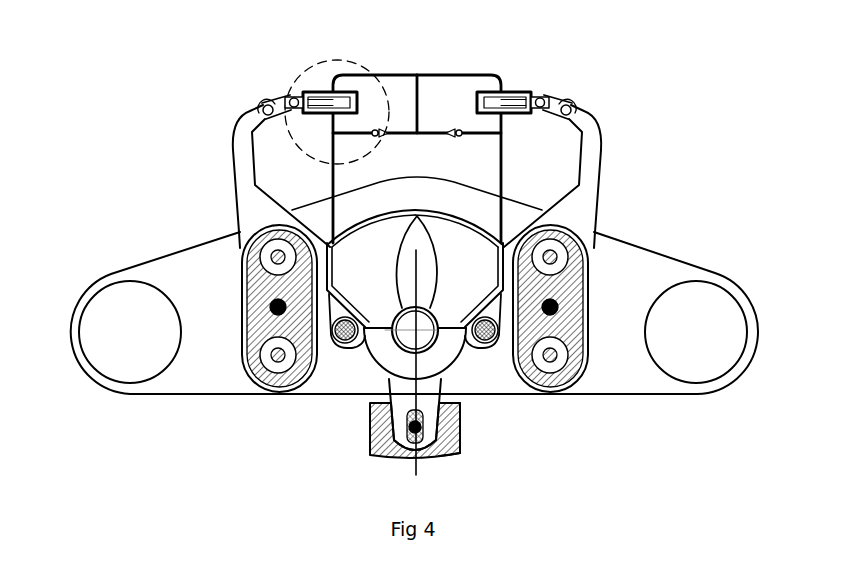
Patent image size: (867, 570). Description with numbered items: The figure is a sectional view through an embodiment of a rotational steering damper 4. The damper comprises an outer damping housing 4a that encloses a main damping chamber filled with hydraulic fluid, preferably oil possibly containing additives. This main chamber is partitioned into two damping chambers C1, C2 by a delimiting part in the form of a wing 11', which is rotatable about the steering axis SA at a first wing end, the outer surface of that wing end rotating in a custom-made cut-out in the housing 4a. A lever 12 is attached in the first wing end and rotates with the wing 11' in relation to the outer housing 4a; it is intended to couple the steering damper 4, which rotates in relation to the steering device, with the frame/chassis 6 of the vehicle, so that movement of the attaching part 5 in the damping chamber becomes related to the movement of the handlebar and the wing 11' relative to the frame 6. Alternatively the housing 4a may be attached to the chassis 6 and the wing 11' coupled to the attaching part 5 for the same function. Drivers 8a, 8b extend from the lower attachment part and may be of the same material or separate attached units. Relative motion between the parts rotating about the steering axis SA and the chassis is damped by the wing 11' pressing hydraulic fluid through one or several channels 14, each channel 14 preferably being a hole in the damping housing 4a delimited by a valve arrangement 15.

The steering damper 4 is at (417, 213).
The outer damping housing 4a is at (443, 357).
The attaching part 5 is at (203, 300).
The frame/chassis 6 is at (370, 445).
The driver 8a is at (245, 172).
The driver 8b is at (587, 185).
The wing 11' is at (451, 309).
The lever 12 is at (460, 452).
The channel 14 is at (434, 79).
The valve arrangement 15 is at (293, 82).
The damping chamber C1 is at (358, 285).
The damping chamber C2 is at (485, 265).
The steering axis SA is at (415, 327).